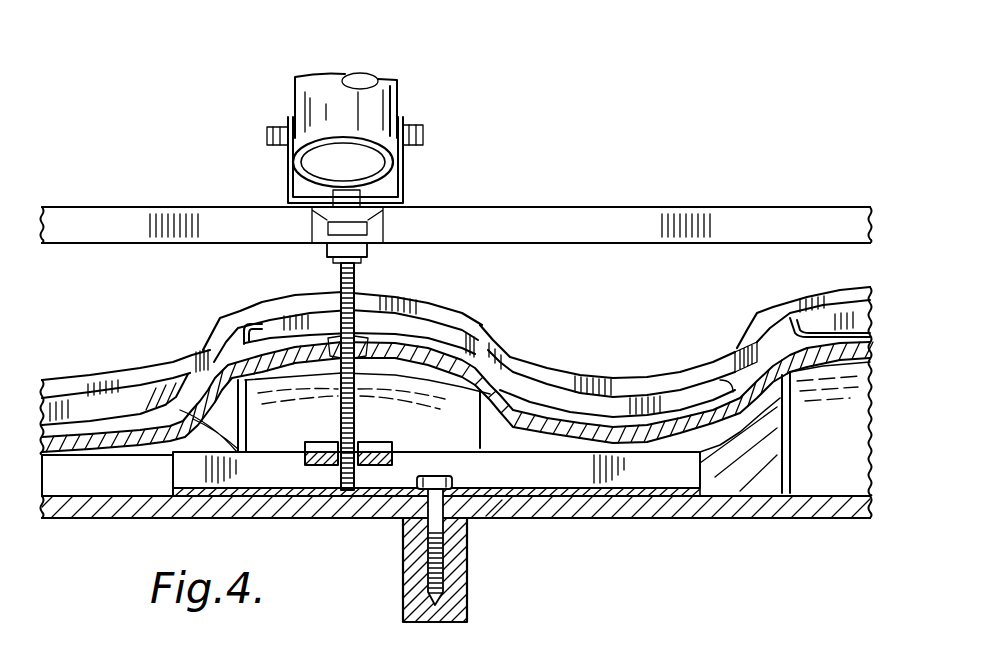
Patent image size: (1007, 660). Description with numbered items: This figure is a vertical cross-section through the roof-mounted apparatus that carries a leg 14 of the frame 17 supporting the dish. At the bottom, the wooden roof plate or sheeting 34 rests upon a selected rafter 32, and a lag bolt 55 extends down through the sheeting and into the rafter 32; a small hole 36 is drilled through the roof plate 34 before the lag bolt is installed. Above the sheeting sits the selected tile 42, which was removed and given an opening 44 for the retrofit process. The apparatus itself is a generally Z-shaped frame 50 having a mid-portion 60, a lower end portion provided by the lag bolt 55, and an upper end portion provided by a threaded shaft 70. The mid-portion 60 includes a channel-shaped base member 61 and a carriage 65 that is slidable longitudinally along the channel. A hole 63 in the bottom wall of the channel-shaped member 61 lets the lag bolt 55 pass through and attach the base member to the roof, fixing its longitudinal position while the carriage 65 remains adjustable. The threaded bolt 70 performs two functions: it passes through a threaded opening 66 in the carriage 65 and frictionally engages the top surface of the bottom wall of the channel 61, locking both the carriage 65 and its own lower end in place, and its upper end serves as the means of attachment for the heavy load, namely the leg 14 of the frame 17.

The leg 14 is at (402, 98).
The frame 17 is at (565, 206).
The threaded shaft 70 is at (356, 271).
The opening 44 is at (247, 316).
The selected tile 42 is at (442, 355).
The threaded opening 66 is at (329, 442).
The carriage 65 is at (394, 443).
The channel-shaped member 61 is at (170, 474).
The mid-portion 60 is at (288, 478).
The hole 63 is at (388, 495).
The roof plate 34 is at (643, 507).
The small hole 36 is at (492, 507).
The Z-shaped frame 50 is at (523, 478).
The rafter 32 is at (468, 598).
The lag bolt 55 is at (405, 565).